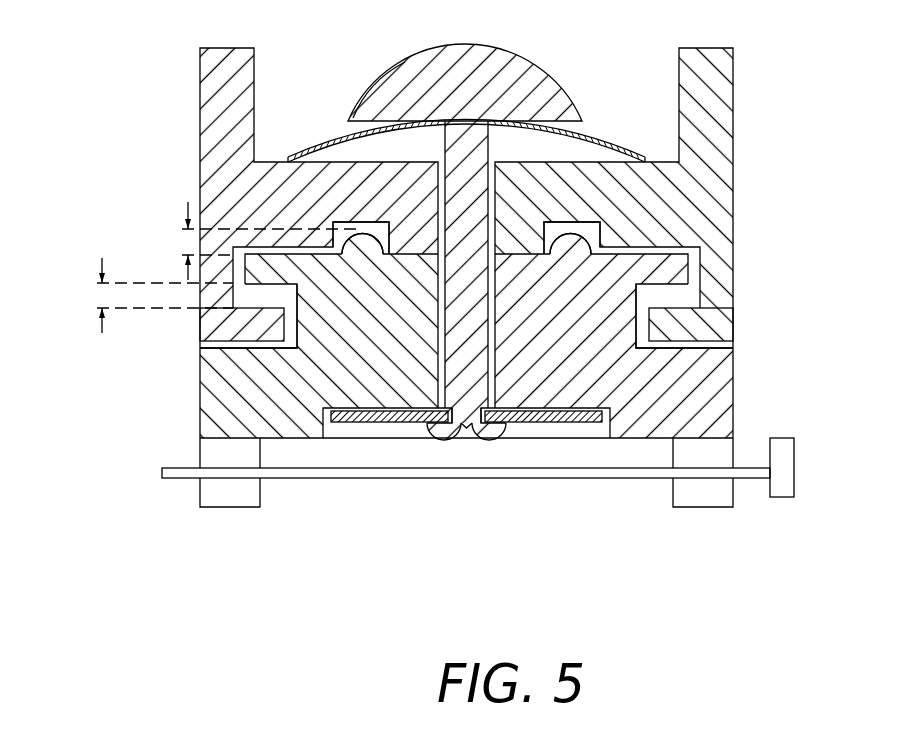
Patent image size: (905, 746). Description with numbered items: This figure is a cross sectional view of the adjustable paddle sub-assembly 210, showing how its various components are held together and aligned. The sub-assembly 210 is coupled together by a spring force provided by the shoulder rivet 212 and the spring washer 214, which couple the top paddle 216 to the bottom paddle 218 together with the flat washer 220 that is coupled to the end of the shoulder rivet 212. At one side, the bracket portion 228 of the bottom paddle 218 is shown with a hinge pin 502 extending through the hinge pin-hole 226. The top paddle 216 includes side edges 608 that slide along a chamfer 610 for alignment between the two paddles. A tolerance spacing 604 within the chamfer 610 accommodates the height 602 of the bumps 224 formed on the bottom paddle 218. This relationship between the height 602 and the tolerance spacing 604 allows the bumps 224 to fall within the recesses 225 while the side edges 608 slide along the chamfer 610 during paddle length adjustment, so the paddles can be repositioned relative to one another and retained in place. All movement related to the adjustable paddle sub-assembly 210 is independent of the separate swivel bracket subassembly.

The adjustable paddle sub-assembly 210 is at (441, 336).
The shoulder rivet 212 is at (530, 62).
The spring washer 214 is at (590, 137).
The top paddle 216 is at (715, 223).
The bottom paddle 218 is at (712, 386).
The flat washer 220 is at (360, 423).
The bumps 224 is at (357, 228).
The recesses 225 is at (372, 242).
The hinge pin-hole 226 is at (260, 480).
The hinge bracket area 228 is at (231, 489).
The hinge pin 502 is at (795, 463).
The height 602 is at (180, 239).
The tolerance spacing 604 is at (93, 294).
The side edges 608 is at (201, 329).
The chamfer 610 is at (292, 327).